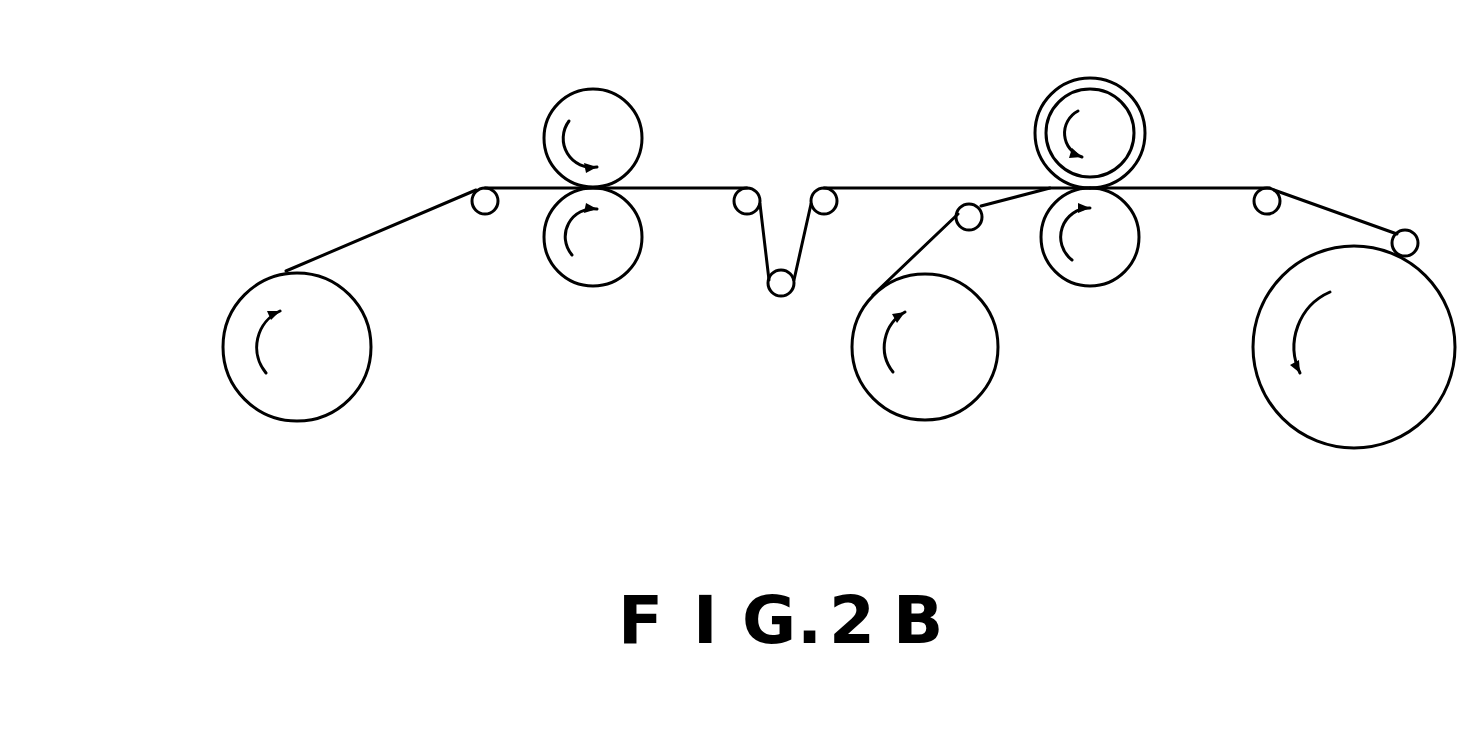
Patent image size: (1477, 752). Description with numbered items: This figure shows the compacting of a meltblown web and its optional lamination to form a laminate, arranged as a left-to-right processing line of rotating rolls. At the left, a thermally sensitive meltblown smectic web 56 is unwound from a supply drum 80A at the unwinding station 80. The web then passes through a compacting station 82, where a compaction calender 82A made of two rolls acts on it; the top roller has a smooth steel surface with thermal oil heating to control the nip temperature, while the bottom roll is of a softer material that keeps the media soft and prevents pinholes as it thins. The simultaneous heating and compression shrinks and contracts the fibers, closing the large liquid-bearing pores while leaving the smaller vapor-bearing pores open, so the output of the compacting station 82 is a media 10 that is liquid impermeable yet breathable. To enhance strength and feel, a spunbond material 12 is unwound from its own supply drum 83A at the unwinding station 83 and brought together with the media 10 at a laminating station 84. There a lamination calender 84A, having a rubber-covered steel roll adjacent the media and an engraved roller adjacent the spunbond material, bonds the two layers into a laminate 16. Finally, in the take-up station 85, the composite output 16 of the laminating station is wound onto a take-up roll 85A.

The media 10 is at (897, 150).
The spunbond material 12 is at (940, 233).
The laminate 16 is at (1218, 188).
The thermally sensitive meltblown smectic web 56 is at (392, 224).
The unwinding station 80 is at (355, 400).
The supply drum 80A is at (228, 312).
The compacting station 82 is at (502, 85).
The compaction calender 82A is at (547, 132).
The unwinding station 83 is at (912, 420).
The supply drum 83A is at (852, 340).
The laminating station 84 is at (1217, 93).
The lamination calender 84A is at (1145, 133).
The take-up station 85 is at (1350, 450).
The take-up roll 85A is at (1253, 340).